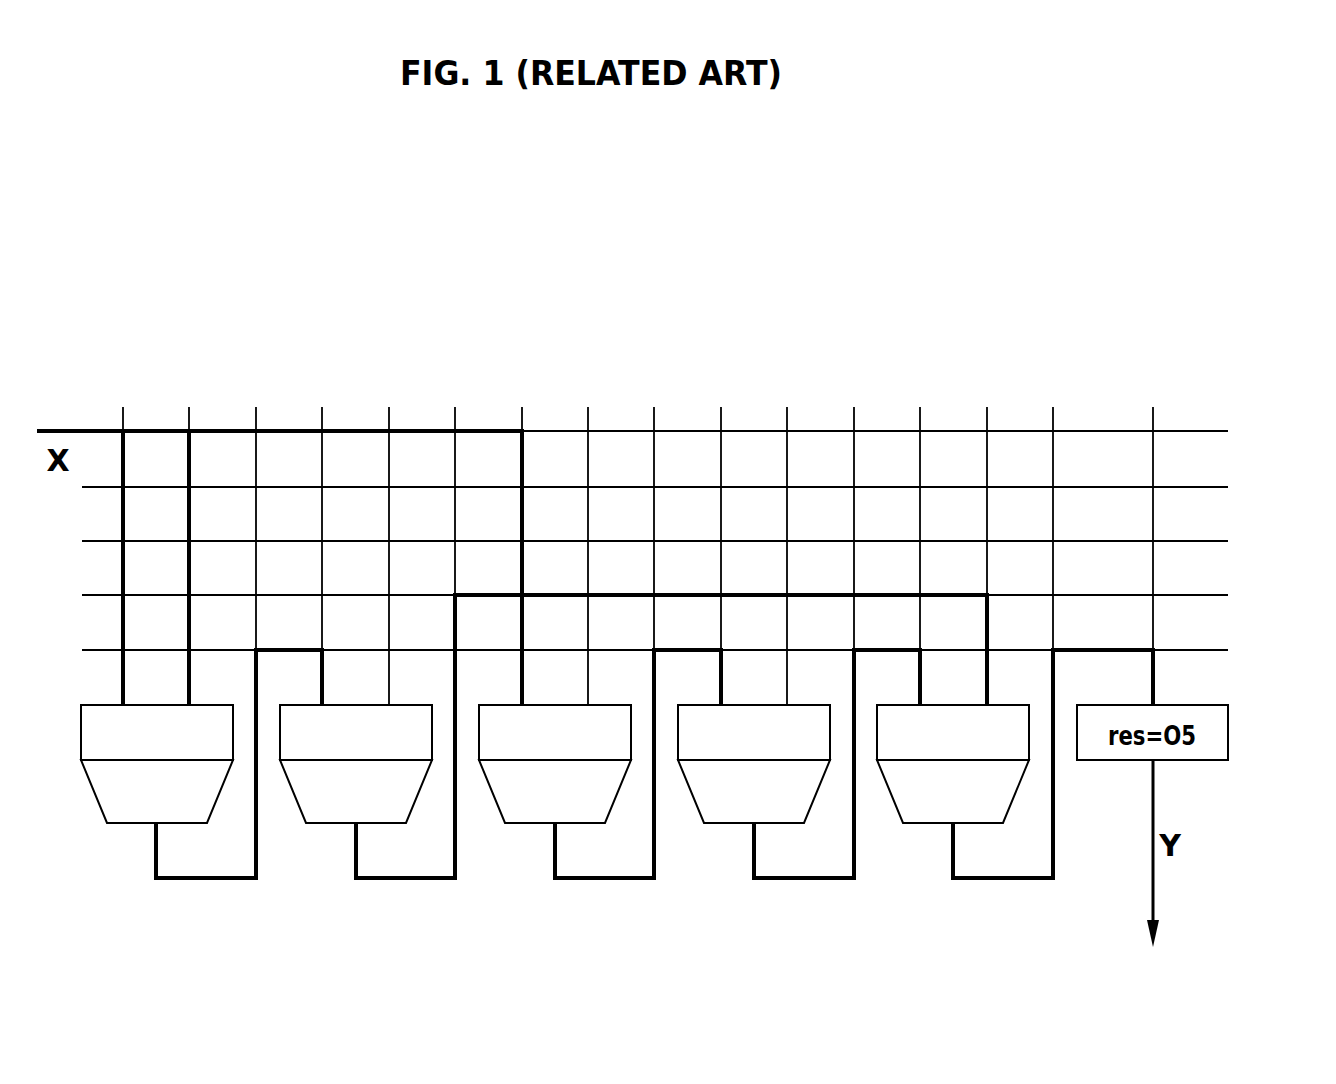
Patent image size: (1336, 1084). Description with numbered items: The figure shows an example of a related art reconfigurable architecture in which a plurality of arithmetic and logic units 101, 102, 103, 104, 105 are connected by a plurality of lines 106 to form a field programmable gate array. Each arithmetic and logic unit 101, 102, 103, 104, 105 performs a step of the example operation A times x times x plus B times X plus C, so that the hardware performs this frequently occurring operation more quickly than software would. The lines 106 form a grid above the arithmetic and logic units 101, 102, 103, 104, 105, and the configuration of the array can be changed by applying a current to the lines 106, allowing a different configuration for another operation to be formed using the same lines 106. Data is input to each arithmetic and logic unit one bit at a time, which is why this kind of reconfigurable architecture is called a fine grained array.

The arithmetic and logic unit 101 is at (93, 792).
The arithmetic and logic unit 102 is at (292, 792).
The arithmetic and logic unit 103 is at (491, 792).
The arithmetic and logic unit 104 is at (690, 792).
The arithmetic and logic unit 105 is at (890, 792).
The lines 106 is at (1236, 421).